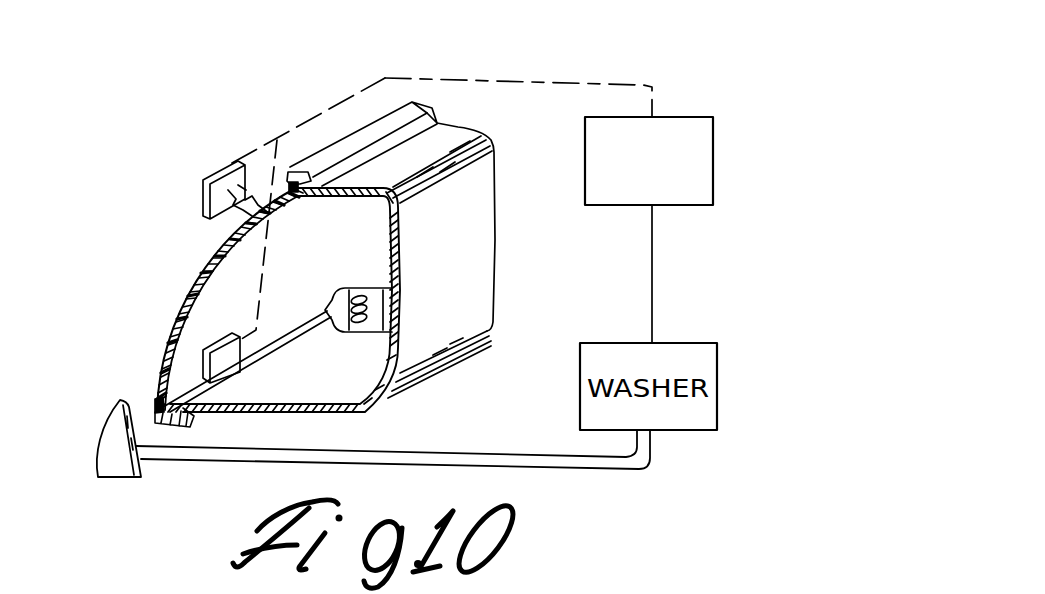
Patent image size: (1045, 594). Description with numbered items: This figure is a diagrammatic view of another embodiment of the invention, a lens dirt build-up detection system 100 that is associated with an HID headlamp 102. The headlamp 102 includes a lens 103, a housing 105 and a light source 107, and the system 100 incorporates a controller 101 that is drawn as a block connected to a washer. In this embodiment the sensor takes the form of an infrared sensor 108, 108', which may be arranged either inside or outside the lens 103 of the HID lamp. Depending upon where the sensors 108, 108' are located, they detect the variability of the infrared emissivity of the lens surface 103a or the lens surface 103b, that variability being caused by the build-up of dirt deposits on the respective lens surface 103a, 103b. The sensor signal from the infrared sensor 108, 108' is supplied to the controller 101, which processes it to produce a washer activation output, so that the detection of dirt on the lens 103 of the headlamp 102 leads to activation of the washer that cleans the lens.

The lens dirt build-up detection system 100 is at (575, 84).
The controller 101 is at (699, 152).
The HID headlamp 102 is at (492, 272).
The lens 103 is at (172, 331).
The lens surface 103a is at (195, 276).
The lens surface 103b is at (217, 270).
The housing 105 is at (449, 132).
The light source 107 is at (343, 328).
The infrared sensor 108 is at (178, 178).
The infrared sensor 108' is at (158, 261).